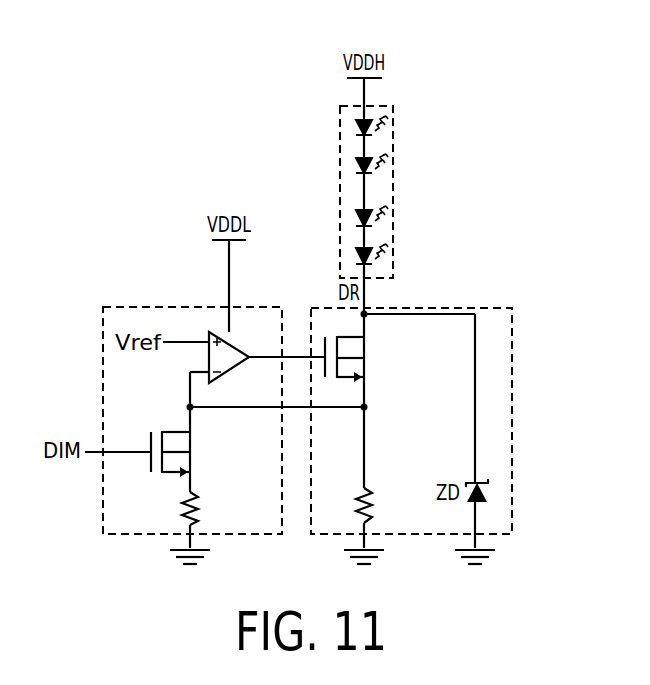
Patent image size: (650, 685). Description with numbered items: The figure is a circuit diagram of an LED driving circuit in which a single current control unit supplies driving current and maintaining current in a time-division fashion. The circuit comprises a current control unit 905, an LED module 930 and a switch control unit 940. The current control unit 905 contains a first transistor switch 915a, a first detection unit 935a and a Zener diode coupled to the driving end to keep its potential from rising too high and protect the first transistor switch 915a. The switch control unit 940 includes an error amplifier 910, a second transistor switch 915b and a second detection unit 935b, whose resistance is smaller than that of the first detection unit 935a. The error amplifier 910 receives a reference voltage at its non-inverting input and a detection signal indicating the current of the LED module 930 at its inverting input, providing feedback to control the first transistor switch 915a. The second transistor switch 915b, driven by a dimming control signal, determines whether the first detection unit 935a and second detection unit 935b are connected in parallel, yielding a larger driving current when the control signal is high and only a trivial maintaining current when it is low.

The current control unit 905 is at (490, 307).
The error amplifier 910 is at (231, 340).
The first transistor switch 915a is at (375, 358).
The second transistor switch 915b is at (195, 450).
The LED module 930 is at (339, 172).
The first detection unit 935a is at (372, 509).
The second detection unit 935b is at (197, 510).
The switch control unit 940 is at (268, 306).